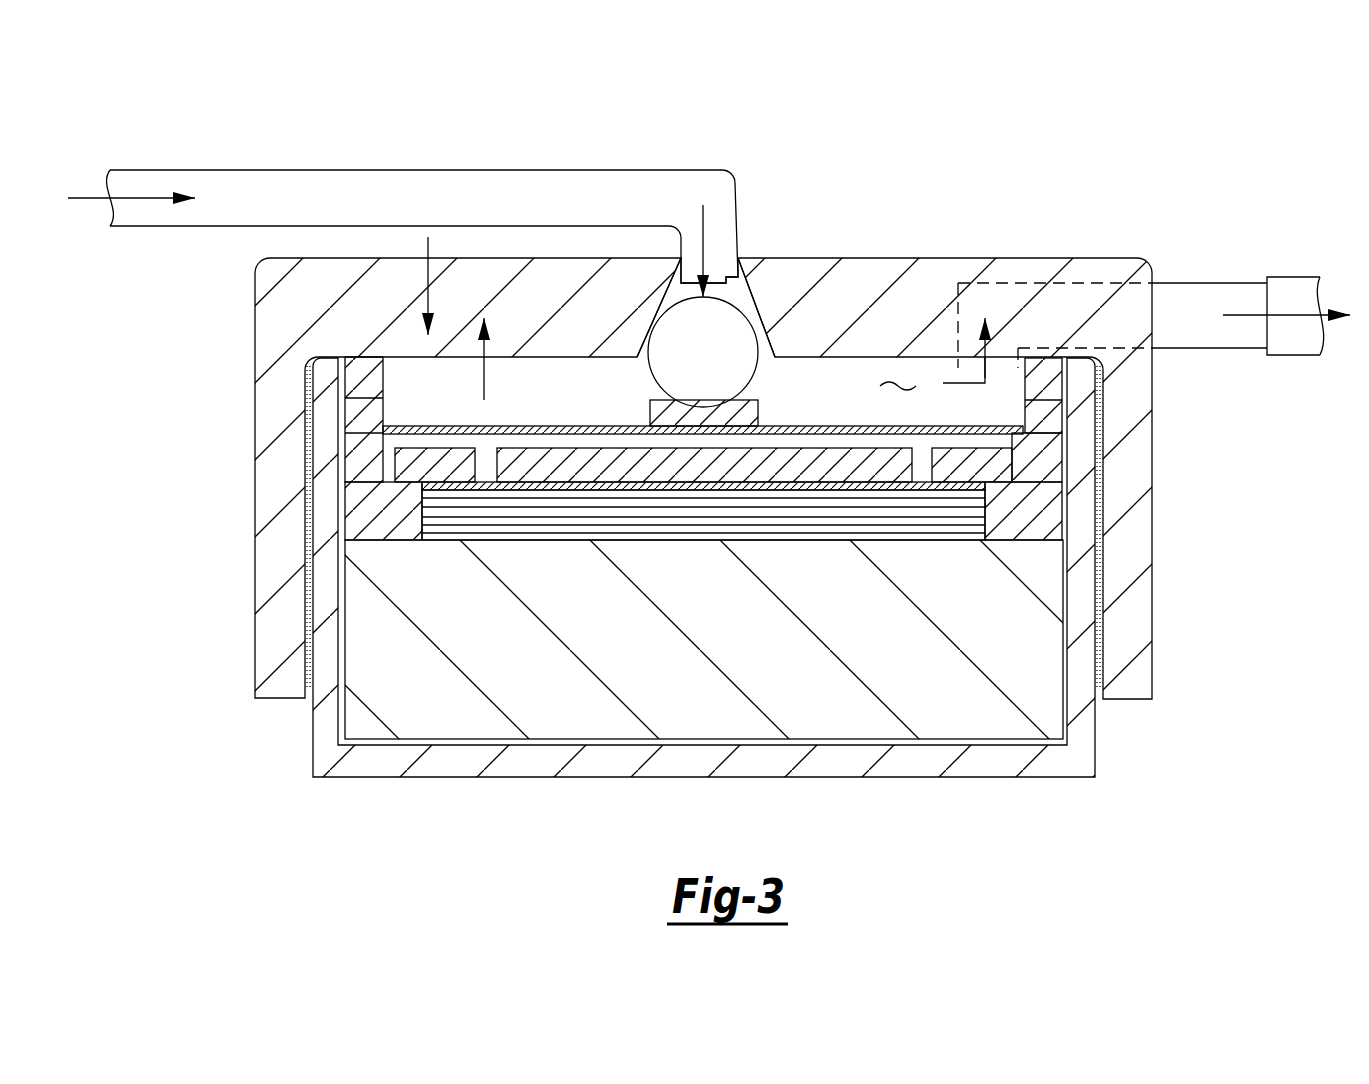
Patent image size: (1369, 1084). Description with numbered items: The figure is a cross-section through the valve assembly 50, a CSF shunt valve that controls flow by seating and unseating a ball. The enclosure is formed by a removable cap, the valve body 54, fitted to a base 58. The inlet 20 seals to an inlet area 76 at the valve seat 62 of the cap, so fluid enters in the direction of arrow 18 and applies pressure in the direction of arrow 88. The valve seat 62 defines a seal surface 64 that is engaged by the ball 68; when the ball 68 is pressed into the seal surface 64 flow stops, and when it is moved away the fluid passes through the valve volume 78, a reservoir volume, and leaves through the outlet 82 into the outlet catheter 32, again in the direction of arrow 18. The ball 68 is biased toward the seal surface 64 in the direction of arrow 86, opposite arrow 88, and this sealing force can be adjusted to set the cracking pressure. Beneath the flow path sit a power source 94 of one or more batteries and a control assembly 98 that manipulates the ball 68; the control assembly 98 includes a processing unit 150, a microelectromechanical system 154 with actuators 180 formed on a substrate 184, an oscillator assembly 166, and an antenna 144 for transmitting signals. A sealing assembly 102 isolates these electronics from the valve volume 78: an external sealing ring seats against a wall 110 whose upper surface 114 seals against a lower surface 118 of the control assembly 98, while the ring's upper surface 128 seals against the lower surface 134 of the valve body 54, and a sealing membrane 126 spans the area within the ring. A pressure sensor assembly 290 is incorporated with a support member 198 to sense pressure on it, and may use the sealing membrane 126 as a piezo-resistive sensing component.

The arrow 18 is at (143, 198).
The inlet 20 is at (386, 170).
The outlet catheter 32 is at (1270, 280).
The valve assembly 50 is at (148, 505).
The valve body 54 is at (278, 313).
The base 58 is at (330, 742).
The valve seat 62 is at (764, 320).
The seal surface 64 is at (757, 328).
The ball 68 is at (757, 380).
The inlet area 76 is at (722, 277).
The valve volume 78 is at (907, 378).
The outlet 82 is at (1208, 283).
The arrow 86 is at (483, 365).
The arrow 88 is at (427, 273).
The power source 94 is at (522, 683).
The control assembly 98 is at (386, 456).
The sealing assembly 102 is at (338, 410).
The wall 110 is at (1064, 478).
The upper surface 114 is at (1042, 435).
The lower surface 118 is at (1067, 450).
The sealing membrane 126 is at (927, 427).
The upper surface 128 is at (362, 400).
The lower surface 134 is at (403, 358).
The antenna 144 is at (845, 540).
The processing unit 150 is at (410, 472).
The microelectromechanical system 154 is at (722, 463).
The oscillator assembly 166 is at (977, 467).
The actuator 180 is at (602, 439).
The substrate 184 is at (560, 445).
The support member 198 is at (646, 413).
The pressure sensor assembly 290 is at (853, 421).